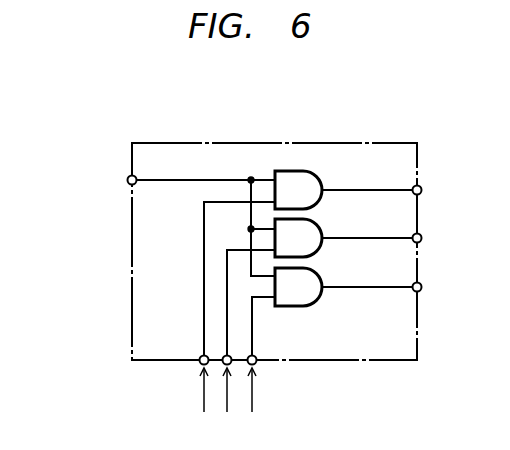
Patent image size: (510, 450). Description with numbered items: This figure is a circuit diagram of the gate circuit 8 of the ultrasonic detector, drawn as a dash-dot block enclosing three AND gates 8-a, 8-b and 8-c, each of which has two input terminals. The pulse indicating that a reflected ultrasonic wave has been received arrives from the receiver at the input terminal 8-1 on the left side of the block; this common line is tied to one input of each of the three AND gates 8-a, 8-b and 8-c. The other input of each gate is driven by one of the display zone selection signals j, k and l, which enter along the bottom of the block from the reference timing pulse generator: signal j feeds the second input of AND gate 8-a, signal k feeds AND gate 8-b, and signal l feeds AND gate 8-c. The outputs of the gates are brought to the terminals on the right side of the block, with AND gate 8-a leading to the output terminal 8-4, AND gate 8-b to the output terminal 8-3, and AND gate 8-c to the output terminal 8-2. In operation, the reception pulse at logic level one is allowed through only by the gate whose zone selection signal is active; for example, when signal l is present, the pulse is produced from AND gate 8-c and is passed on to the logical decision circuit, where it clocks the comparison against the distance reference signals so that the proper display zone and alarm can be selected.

The gate circuit 8 is at (226, 143).
The input terminal 8-1 is at (129, 183).
The output terminal 8-2 is at (420, 290).
The output terminal 8-3 is at (421, 238).
The output terminal 8-4 is at (420, 186).
The AND gate 8-a is at (312, 172).
The AND gate 8-b is at (314, 223).
The AND gate 8-c is at (318, 271).
The display zone selection signal j is at (203, 398).
The display zone selection signal k is at (226, 396).
The display zone selection signal l is at (251, 395).